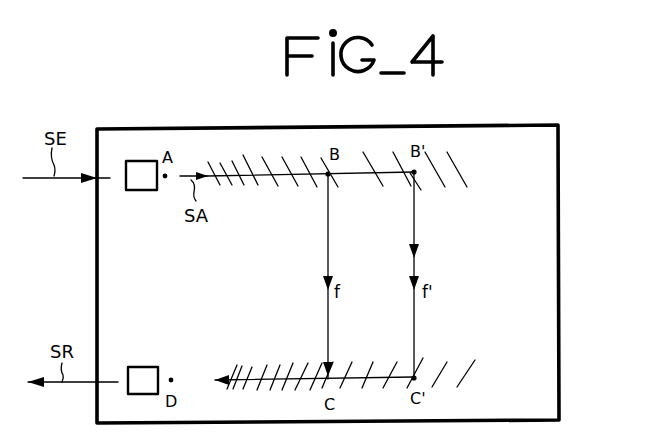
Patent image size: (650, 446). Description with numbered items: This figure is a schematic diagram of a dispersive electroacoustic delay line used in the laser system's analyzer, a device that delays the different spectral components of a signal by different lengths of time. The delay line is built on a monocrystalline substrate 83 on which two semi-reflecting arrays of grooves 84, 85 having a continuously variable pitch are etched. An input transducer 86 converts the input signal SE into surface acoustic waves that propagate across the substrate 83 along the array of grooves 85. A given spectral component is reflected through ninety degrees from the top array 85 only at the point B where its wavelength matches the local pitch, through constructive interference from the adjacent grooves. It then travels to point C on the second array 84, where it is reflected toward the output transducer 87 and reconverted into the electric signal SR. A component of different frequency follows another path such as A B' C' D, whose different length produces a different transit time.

The monocrystalline substrate 83 is at (97, 286).
The semi-reflecting array of grooves 84 is at (266, 350).
The semi-reflecting array of grooves 85 is at (283, 191).
The input transducer 86 is at (143, 191).
The output transducer 87 is at (143, 365).